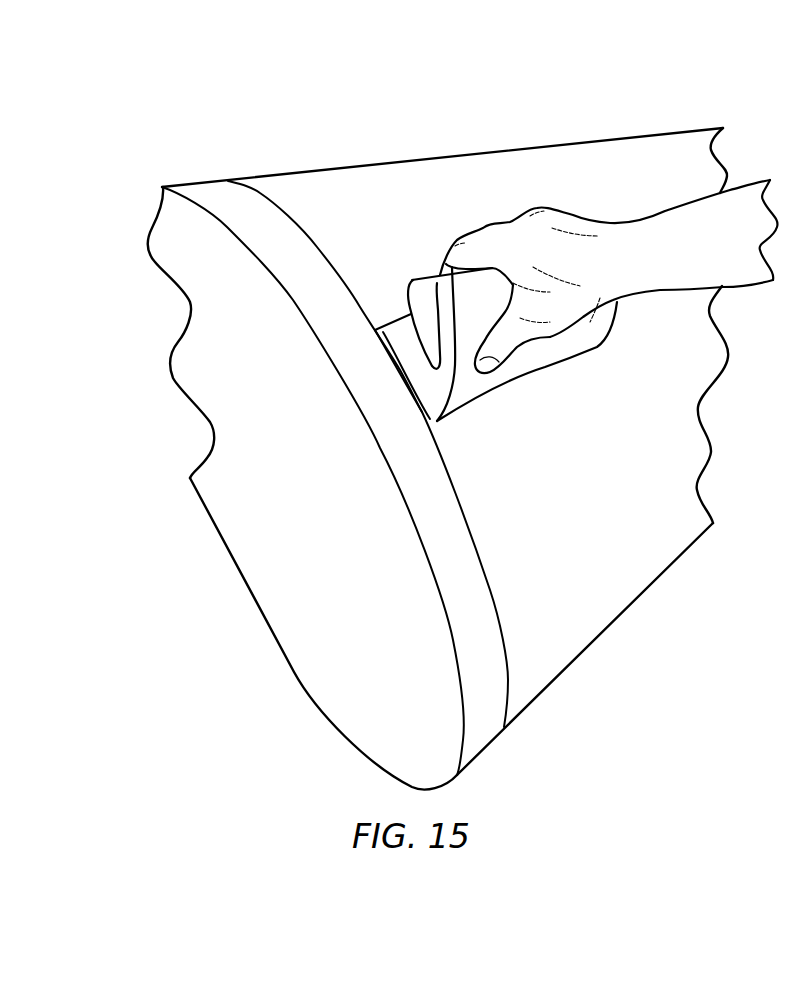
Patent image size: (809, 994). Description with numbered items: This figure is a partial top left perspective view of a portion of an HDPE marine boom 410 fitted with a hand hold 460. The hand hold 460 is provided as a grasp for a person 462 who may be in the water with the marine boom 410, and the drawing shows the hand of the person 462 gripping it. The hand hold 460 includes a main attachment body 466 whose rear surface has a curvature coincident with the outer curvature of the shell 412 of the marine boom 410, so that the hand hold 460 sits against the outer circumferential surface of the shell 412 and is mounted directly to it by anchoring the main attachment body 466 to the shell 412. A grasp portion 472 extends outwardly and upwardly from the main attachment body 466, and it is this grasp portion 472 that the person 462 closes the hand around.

The marine boom 410 is at (438, 404).
The shell 412 is at (338, 186).
The hand hold 460 is at (538, 368).
The person 462 is at (578, 223).
The main attachment body 466 is at (397, 352).
The grasp portion 472 is at (432, 287).